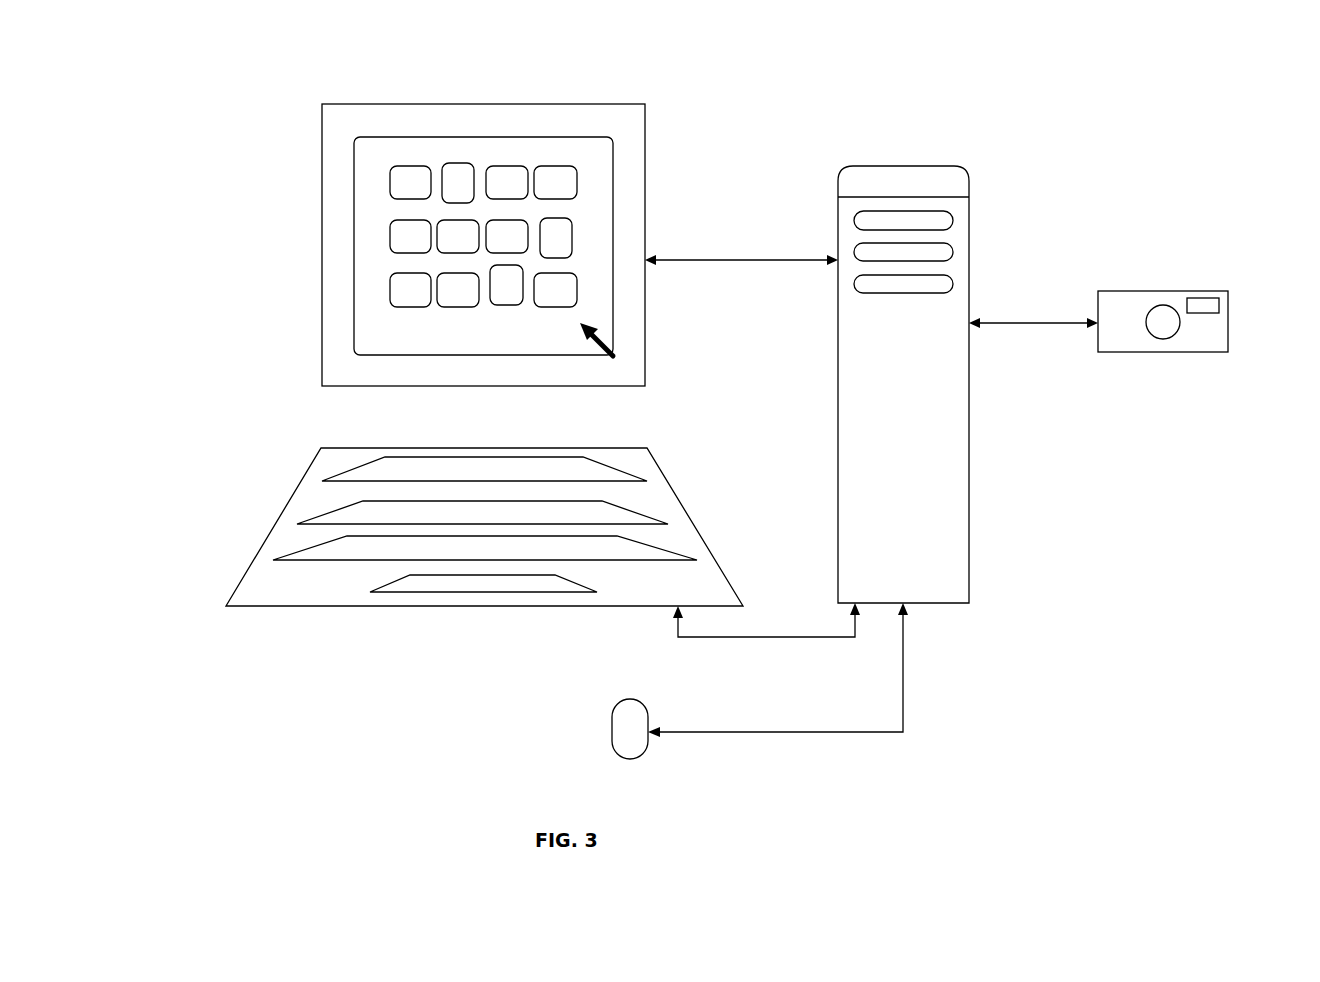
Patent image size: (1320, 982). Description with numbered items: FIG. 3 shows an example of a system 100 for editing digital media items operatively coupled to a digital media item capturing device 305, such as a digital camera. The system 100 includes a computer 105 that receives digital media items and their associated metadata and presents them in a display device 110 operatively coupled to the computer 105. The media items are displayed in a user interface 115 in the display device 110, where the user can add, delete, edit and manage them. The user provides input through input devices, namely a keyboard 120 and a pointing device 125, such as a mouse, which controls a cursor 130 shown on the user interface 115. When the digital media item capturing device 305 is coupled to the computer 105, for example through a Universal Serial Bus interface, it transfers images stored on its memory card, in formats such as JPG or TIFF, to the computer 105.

The system 100 is at (805, 84).
The computer 105 is at (920, 410).
The display device 110 is at (322, 167).
The user interface 115 is at (354, 262).
The keyboard 120 is at (447, 563).
The pointing device 125 is at (612, 732).
The cursor 130 is at (600, 341).
The digital media item capturing device 305 is at (1163, 352).